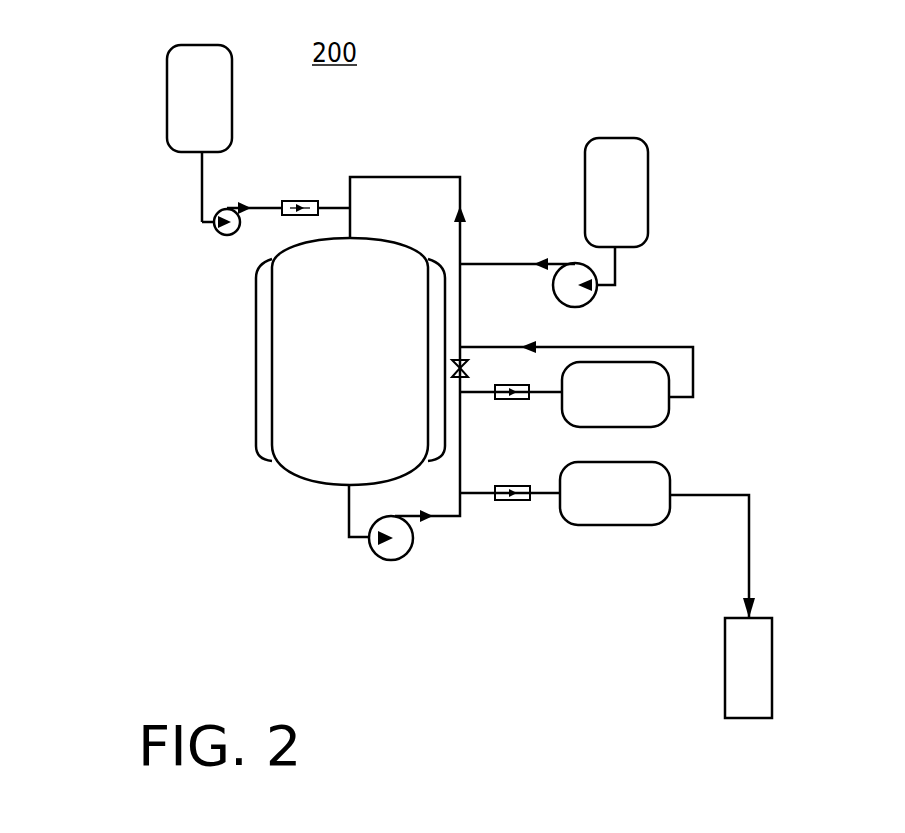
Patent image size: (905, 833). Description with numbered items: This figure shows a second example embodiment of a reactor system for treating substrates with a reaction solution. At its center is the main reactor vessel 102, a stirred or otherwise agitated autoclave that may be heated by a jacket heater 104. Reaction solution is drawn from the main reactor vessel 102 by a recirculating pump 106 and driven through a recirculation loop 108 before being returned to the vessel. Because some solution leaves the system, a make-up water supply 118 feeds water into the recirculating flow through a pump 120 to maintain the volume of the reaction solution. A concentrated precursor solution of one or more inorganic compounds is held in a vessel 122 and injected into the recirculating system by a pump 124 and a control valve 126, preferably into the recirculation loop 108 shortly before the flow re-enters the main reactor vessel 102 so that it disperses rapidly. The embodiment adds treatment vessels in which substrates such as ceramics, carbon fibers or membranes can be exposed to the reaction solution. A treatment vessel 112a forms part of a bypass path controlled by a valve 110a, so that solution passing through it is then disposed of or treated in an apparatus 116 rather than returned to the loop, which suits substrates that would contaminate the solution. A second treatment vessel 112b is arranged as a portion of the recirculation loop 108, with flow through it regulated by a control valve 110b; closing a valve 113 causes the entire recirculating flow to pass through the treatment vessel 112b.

The main reactor vessel 102 is at (302, 393).
The jacket heater 104 is at (256, 315).
The recirculating pump 106 is at (369, 550).
The recirculation loop 108 is at (400, 177).
The valve 110a is at (508, 500).
The control valve 110b is at (518, 385).
The treatment vessel 112a is at (602, 525).
The treatment vessel 112b is at (669, 410).
The valve 113 is at (466, 376).
The apparatus 116 is at (745, 718).
The make-up water supply 118 is at (648, 175).
The pump 120 is at (590, 308).
The vessel 122 is at (167, 130).
The pump 124 is at (227, 235).
The control valve 126 is at (300, 201).